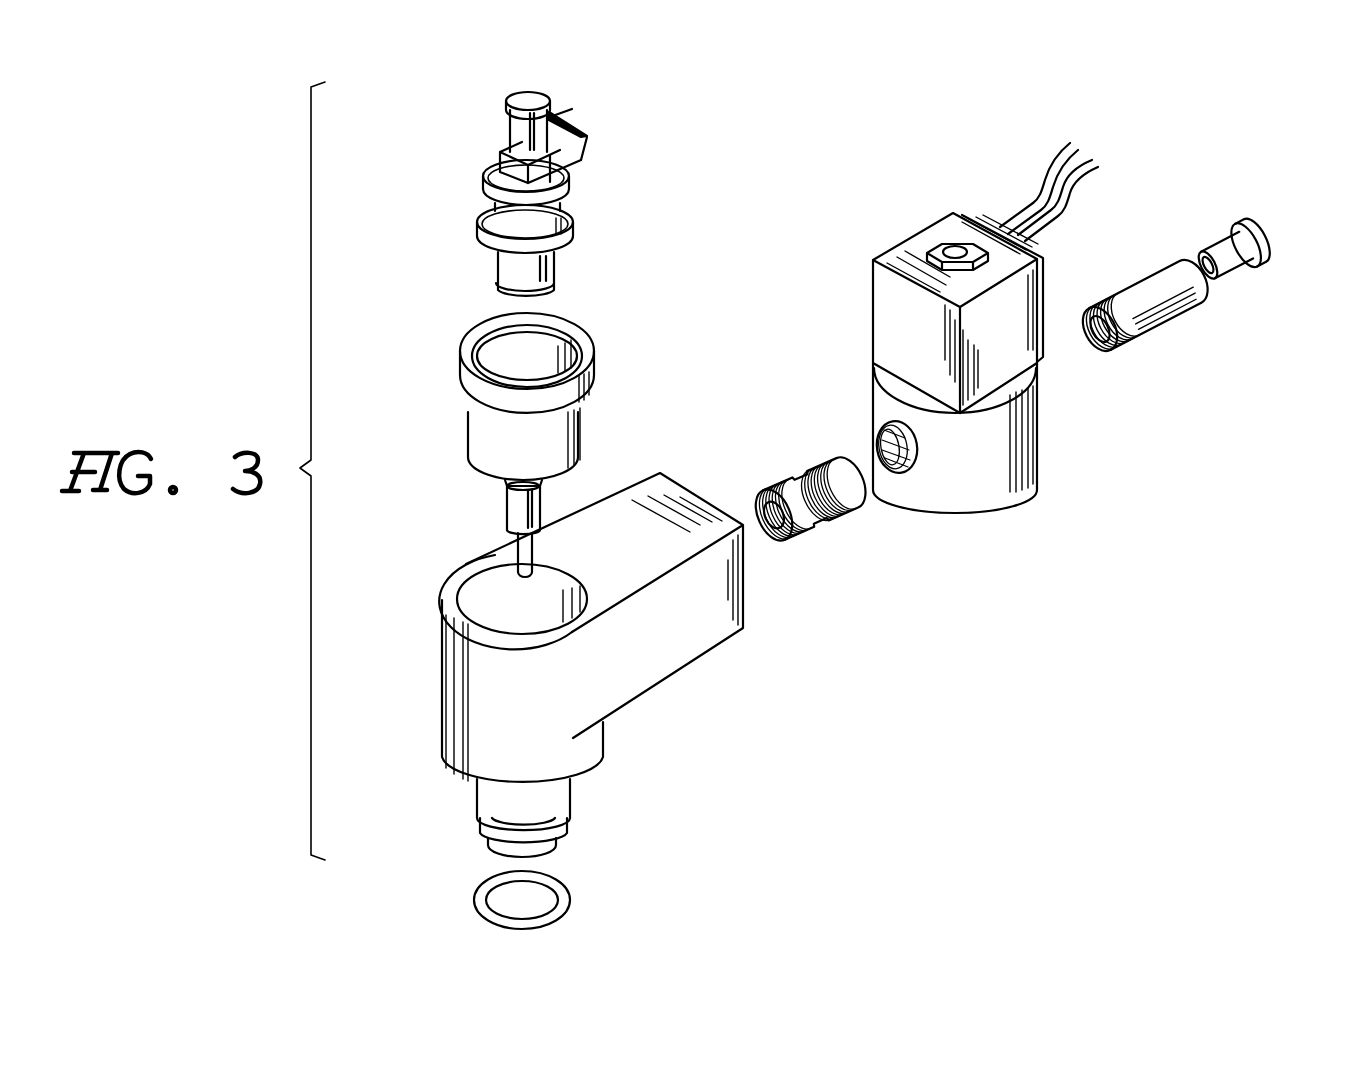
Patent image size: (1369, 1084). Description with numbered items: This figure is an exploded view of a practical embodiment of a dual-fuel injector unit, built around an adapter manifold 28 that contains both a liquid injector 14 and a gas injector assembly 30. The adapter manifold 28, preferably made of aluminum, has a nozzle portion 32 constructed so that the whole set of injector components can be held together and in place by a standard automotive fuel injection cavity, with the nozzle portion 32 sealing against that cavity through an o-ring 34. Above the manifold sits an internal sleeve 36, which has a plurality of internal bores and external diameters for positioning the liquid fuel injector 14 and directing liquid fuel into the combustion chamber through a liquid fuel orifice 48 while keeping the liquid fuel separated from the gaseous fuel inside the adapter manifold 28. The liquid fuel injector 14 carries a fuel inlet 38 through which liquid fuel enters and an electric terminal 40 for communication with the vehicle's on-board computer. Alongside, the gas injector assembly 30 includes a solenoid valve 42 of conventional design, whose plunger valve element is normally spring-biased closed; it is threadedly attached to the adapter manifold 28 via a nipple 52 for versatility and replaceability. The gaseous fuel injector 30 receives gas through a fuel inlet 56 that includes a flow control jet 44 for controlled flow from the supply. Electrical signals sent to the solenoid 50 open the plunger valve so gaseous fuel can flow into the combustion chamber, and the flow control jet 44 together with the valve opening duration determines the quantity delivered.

The liquid fuel injector 14 is at (555, 174).
The adapter manifold 28 is at (445, 592).
The gas injector assembly 30 is at (655, 665).
The nozzle portion 32 is at (476, 789).
The o-ring 34 is at (572, 896).
The internal sleeve 36 is at (597, 362).
The fuel inlet 38 is at (524, 92).
The electric terminal 40 is at (576, 122).
The solenoid valve 42 is at (995, 340).
The flow control jet 44 is at (1270, 246).
The liquid fuel orifice 48 is at (540, 568).
The solenoid 50 is at (941, 213).
The nipple 52 is at (805, 465).
The fuel inlet 56 is at (1139, 283).